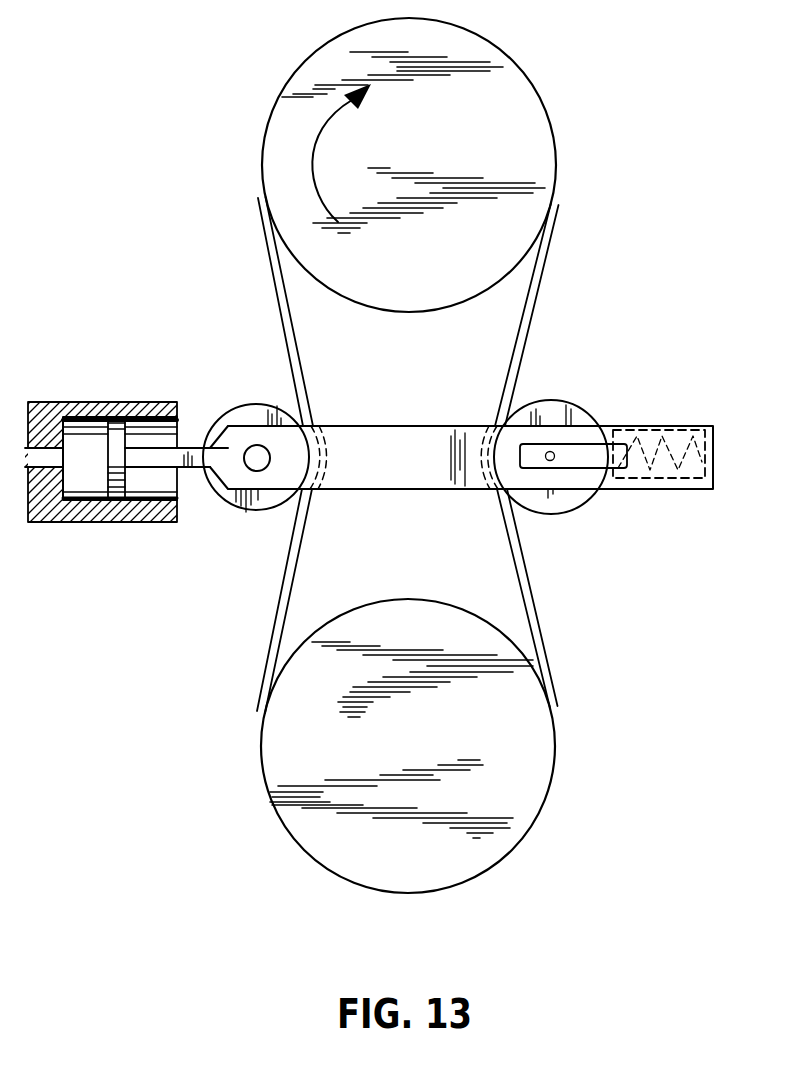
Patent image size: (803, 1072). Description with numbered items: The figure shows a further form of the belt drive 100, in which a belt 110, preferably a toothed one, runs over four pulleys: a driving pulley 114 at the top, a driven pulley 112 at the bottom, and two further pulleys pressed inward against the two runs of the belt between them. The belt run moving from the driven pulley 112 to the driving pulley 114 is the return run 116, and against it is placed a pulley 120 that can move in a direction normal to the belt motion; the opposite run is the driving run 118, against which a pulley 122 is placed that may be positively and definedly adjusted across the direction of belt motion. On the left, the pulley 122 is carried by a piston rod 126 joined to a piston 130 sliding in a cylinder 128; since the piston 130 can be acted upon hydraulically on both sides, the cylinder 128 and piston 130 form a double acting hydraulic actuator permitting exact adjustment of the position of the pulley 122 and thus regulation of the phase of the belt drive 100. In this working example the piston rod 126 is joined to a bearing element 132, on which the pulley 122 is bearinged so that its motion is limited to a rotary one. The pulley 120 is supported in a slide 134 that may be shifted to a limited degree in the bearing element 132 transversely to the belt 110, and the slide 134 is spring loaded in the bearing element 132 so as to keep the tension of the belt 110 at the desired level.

The belt drive 100 is at (528, 584).
The belt 110 is at (405, 455).
The driven pulley 112 is at (542, 777).
The driving pulley 114 is at (508, 78).
The return run 116 is at (527, 342).
The driving run 118 is at (290, 322).
The pulley 120 is at (568, 401).
The pulley 122 is at (255, 509).
The piston rod 126 is at (147, 460).
The cylinder 128 is at (82, 500).
The piston 130 is at (117, 440).
The bearing element 132 is at (432, 470).
The slide 134 is at (583, 450).